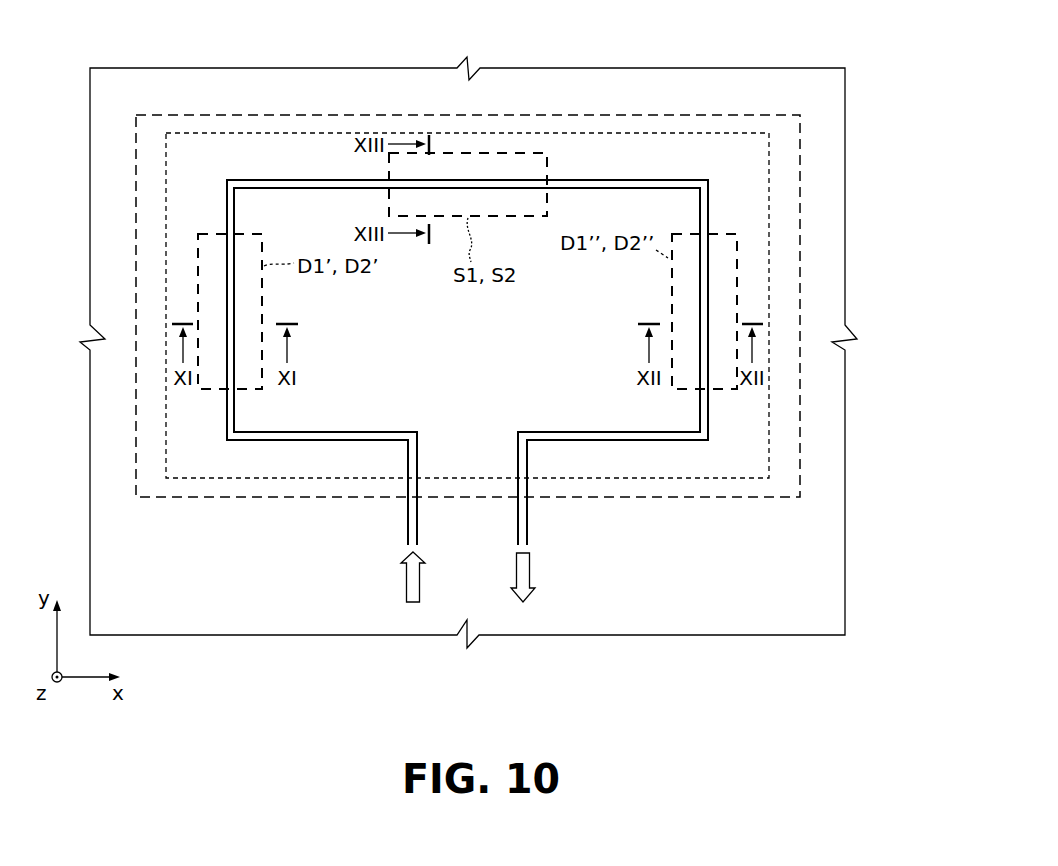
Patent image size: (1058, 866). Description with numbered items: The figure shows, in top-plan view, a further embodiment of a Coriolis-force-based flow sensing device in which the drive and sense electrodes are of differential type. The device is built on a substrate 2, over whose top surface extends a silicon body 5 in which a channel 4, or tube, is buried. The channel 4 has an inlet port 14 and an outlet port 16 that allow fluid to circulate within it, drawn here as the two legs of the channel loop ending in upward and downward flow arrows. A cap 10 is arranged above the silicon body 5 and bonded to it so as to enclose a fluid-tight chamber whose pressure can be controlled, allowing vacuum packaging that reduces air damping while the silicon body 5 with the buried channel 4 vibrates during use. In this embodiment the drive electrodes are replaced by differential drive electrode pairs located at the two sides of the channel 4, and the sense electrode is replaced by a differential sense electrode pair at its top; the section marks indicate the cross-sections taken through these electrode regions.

The substrate 2 is at (850, 187).
The channel 4 is at (309, 182).
The silicon body 5 is at (757, 81).
The cap 10 is at (736, 486).
The inlet port 14 is at (400, 549).
The outlet port 16 is at (535, 549).